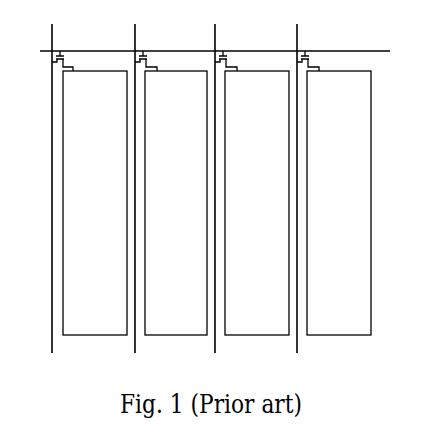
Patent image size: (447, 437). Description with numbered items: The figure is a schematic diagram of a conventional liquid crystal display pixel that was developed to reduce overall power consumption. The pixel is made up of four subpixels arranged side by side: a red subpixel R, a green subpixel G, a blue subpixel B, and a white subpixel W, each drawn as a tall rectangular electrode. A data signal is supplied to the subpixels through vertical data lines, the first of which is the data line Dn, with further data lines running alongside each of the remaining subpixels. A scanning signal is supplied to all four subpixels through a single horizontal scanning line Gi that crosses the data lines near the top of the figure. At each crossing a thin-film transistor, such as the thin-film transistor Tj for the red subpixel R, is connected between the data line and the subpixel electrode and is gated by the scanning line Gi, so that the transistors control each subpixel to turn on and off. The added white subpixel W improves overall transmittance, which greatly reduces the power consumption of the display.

The scanning line Gi is at (205, 51).
The data line Dn is at (52, 182).
The thin-film transistor Tj is at (65, 61).
The red subpixel R is at (95, 203).
The green subpixel G is at (176, 203).
The blue subpixel B is at (257, 203).
The white subpixel W is at (339, 203).